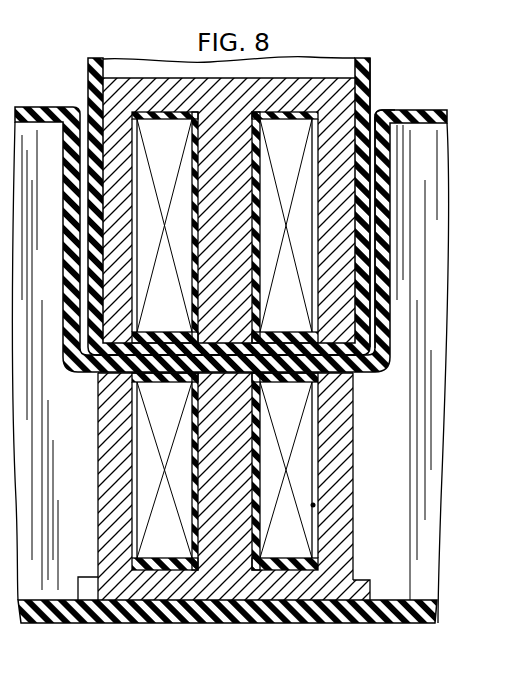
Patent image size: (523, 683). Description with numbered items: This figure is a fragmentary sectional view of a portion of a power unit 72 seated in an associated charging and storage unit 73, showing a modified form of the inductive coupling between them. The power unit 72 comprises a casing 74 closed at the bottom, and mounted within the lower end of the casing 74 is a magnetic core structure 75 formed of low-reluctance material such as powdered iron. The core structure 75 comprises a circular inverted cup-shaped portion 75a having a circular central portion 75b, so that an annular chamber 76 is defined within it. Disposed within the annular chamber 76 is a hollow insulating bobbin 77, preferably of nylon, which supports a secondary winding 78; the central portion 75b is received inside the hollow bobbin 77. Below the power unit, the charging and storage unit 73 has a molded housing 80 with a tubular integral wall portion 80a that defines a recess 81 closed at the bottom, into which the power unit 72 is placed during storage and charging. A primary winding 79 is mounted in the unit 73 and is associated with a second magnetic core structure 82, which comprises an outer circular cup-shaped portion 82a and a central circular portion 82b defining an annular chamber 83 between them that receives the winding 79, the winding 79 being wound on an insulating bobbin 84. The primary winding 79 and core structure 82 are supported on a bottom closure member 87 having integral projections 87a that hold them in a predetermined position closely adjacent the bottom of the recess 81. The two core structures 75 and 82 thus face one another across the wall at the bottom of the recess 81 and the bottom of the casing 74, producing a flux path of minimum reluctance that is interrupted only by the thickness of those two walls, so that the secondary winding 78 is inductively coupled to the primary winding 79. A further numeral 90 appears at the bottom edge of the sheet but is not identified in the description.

The power unit 72 is at (378, 80).
The charging and storage unit 73 is at (433, 103).
The casing 74 is at (88, 88).
The magnetic core structure 75 is at (260, 103).
The inverted cup-shaped portion 75a is at (368, 207).
The circular central portion 75b is at (250, 257).
The annular chamber 76 is at (315, 130).
The insulating bobbin 77 is at (192, 114).
The secondary winding 78 is at (312, 196).
The primary winding 79 is at (293, 415).
The molded housing 80 is at (391, 288).
The tubular integral wall portion 80a is at (391, 183).
The recess 81 is at (376, 116).
The magnetic core structure 82 is at (358, 551).
The outer circular cup-shaped portion 82a is at (354, 467).
The central circular portion 82b is at (228, 470).
The annular chamber 83 is at (315, 505).
The insulating bobbin 84 is at (296, 383).
The bottom closure member 87 is at (331, 616).
The integral projections 87a is at (371, 588).
The lower member 90 is at (164, 663).